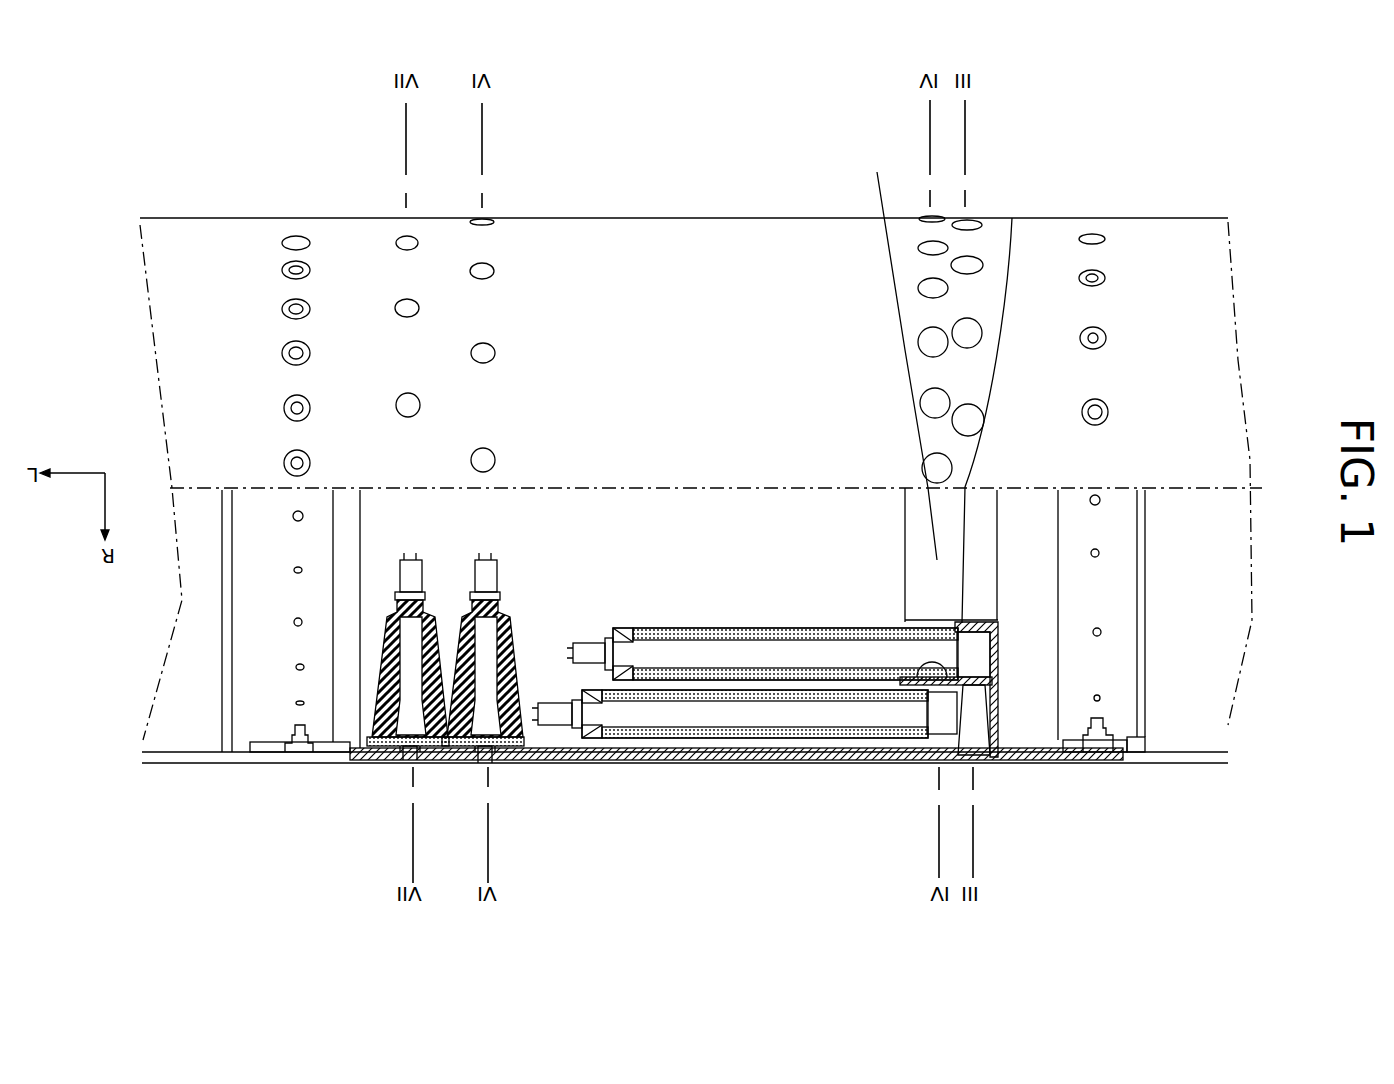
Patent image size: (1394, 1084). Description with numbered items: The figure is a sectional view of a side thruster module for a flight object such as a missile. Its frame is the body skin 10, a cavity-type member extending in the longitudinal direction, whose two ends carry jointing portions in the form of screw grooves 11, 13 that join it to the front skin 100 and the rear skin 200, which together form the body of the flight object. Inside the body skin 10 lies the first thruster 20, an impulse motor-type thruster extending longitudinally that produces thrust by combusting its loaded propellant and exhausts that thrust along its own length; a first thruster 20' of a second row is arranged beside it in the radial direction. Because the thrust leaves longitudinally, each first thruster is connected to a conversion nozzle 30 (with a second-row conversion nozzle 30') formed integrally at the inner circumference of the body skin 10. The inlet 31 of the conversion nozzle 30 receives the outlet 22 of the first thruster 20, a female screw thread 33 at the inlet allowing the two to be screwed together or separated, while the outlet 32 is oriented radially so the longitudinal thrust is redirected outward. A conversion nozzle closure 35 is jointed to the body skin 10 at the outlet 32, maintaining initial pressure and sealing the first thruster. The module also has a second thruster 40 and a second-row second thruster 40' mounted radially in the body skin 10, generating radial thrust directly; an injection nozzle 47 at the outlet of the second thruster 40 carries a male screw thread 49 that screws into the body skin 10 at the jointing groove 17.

The body skin 10 is at (765, 760).
The screw groove 11 is at (1097, 702).
The screw groove 13 is at (298, 706).
The jointing groove 17 is at (406, 768).
The first thruster 20 is at (762, 412).
The first thruster 20' is at (730, 791).
The outlet 22 is at (930, 660).
The conversion nozzle 30 is at (976, 688).
The conversion nozzle 30' is at (915, 790).
The inlet 31 is at (1012, 218).
The outlet 32 is at (984, 690).
The female screw thread 33 is at (937, 618).
The conversion nozzle closure 35 is at (966, 758).
The second thruster 40 is at (488, 452).
The second thruster 40' is at (408, 452).
The injection nozzle 47 is at (490, 766).
The male screw thread 49 is at (485, 768).
The front skin 100 is at (1185, 768).
The rear skin 200 is at (183, 765).